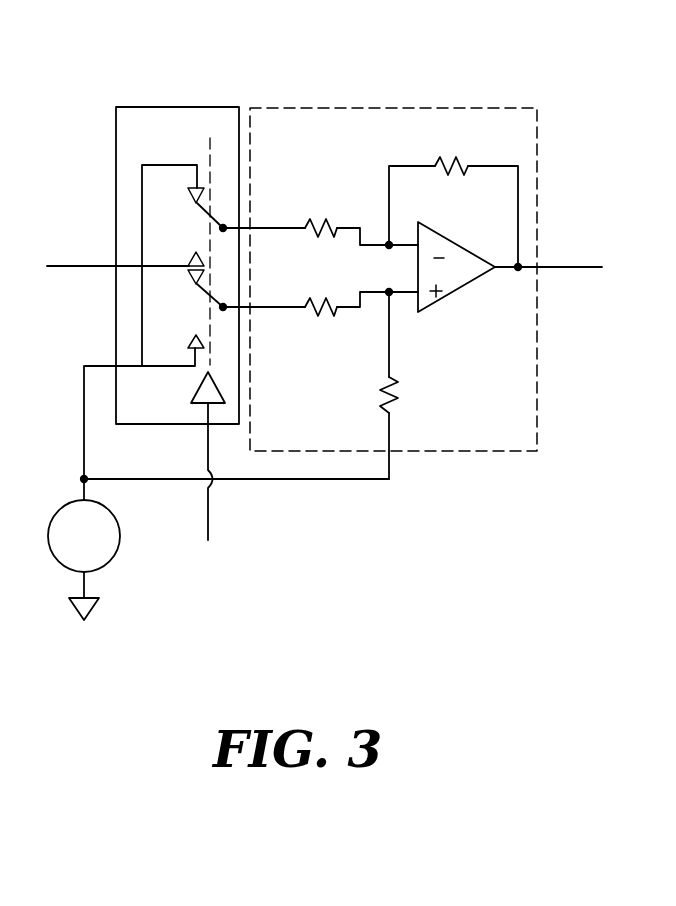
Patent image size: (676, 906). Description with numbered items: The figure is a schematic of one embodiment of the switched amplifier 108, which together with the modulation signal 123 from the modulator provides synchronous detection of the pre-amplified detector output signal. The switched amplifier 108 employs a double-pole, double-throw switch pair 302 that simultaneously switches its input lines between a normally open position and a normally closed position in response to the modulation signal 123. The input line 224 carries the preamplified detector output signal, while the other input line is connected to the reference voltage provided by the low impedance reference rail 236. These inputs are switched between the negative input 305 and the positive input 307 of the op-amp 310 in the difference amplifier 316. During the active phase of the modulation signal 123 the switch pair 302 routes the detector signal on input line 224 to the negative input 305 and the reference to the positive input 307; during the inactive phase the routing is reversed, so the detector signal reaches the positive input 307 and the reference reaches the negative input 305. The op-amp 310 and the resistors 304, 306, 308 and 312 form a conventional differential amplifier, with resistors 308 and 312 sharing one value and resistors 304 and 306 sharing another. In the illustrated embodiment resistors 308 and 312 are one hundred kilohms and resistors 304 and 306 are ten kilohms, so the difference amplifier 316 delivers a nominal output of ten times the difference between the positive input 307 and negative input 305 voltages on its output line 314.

The switched amplifier 108 is at (214, 107).
The double-pole, double-throw switch pair 302 is at (175, 141).
The input line 224 is at (73, 266).
The modulation signal 123 is at (209, 516).
The reference rail 236 is at (110, 560).
The difference amplifier 316 is at (512, 437).
The resistor 304 is at (318, 218).
The negative input 305 is at (373, 238).
The resistor 308 is at (450, 176).
The resistor 306 is at (327, 320).
The positive input 307 is at (405, 297).
The resistor 312 is at (378, 395).
The op-amp 310 is at (457, 292).
The output line 314 is at (566, 266).